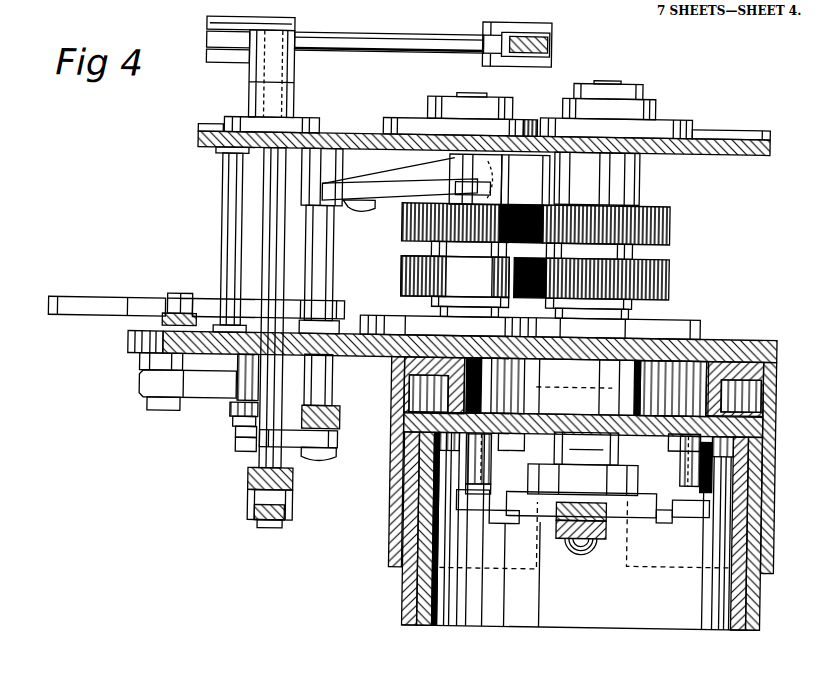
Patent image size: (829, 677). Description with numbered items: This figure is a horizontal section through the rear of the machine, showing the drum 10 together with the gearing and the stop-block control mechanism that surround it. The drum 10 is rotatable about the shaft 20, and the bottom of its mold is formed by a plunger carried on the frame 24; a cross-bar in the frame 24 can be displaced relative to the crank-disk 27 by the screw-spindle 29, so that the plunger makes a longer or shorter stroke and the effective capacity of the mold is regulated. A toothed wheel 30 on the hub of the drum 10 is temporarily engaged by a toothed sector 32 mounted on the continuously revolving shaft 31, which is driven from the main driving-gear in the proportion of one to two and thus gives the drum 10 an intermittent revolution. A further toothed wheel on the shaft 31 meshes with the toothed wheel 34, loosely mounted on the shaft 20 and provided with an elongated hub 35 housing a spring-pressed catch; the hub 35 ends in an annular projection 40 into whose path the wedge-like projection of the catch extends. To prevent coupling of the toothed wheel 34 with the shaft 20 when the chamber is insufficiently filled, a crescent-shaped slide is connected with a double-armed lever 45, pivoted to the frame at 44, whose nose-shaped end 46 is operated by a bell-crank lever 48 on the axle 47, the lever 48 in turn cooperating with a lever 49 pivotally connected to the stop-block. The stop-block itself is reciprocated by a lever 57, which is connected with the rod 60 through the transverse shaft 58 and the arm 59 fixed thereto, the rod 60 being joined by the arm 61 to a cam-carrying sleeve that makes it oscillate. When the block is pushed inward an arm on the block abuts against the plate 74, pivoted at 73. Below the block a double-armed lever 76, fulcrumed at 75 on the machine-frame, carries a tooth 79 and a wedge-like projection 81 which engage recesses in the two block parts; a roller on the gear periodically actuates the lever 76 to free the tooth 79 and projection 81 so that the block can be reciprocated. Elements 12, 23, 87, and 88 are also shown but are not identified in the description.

The drum 10 is at (393, 525).
The pin 12 is at (472, 190).
The shaft 20 is at (610, 76).
The collar 23 is at (495, 496).
The frame 24 is at (543, 512).
The crank-disk 27 is at (627, 462).
The screw-spindle 29 is at (610, 535).
The toothed wheel 30 is at (670, 285).
The shaft 31 is at (466, 96).
The toothed sector 32 is at (455, 277).
The toothed wheel 34 is at (660, 206).
The elongated hub 35 is at (612, 184).
The annular projection 40 is at (496, 179).
The pivot 44 is at (525, 180).
The double-armed lever 45 is at (402, 183).
The nose-shaped end 46 is at (365, 202).
The axle 47 is at (313, 236).
The bell-crank lever 48 is at (298, 194).
The lever 49 is at (165, 325).
The lever 57 is at (296, 518).
The transverse shaft 58 is at (298, 165).
The arm 59 is at (263, 45).
The rod 60 is at (391, 50).
The arm 61 is at (546, 46).
The pivot 73 is at (166, 414).
The plate 74 is at (218, 400).
The fulcrum 75 is at (340, 407).
The double-armed lever 76 is at (370, 193).
The tooth 79 is at (250, 436).
The wedge-like projection 81 is at (248, 452).
The block 87 is at (184, 297).
The bar 88 is at (198, 305).